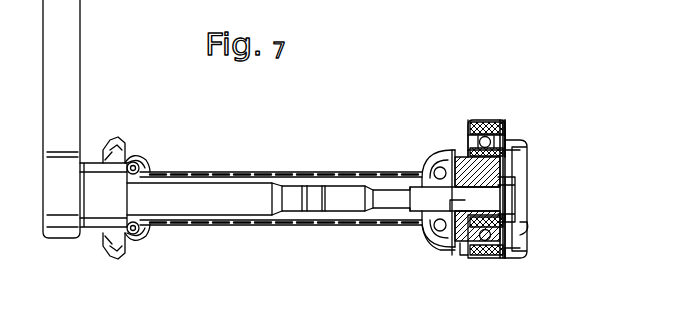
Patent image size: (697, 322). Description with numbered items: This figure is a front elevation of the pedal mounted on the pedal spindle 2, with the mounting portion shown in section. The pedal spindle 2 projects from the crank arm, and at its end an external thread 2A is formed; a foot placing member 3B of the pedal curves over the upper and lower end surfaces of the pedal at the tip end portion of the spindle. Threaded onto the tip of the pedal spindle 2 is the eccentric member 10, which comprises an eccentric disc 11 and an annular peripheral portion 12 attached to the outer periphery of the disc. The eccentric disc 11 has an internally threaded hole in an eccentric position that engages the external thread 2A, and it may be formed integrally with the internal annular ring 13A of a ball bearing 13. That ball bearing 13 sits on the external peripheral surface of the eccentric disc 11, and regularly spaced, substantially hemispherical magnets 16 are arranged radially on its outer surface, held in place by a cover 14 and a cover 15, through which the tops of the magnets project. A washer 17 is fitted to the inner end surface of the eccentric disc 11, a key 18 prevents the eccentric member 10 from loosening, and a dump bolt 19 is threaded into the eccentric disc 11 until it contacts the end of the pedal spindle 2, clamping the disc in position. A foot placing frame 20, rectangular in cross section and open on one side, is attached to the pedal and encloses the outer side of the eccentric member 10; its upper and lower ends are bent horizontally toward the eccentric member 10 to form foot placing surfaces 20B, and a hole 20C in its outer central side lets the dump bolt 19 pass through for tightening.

The pedal spindle 2 is at (292, 185).
The external thread 2A is at (420, 172).
The foot placing member 3B is at (456, 152).
The eccentric member 10 is at (622, 88).
The eccentric disc 11 is at (505, 168).
The annular peripheral portion 12 is at (588, 60).
The ball bearing 13 is at (503, 147).
The internal annular ring 13A is at (468, 138).
The cover 14 is at (490, 121).
The cover 15 is at (497, 138).
The magnet 16 is at (490, 130).
The washer 17 is at (452, 255).
The key 18 is at (428, 243).
The dump bolt 19 is at (515, 202).
The foot placing frame 20 is at (524, 251).
The foot placing surface 20B is at (528, 148).
The hole 20C is at (527, 228).